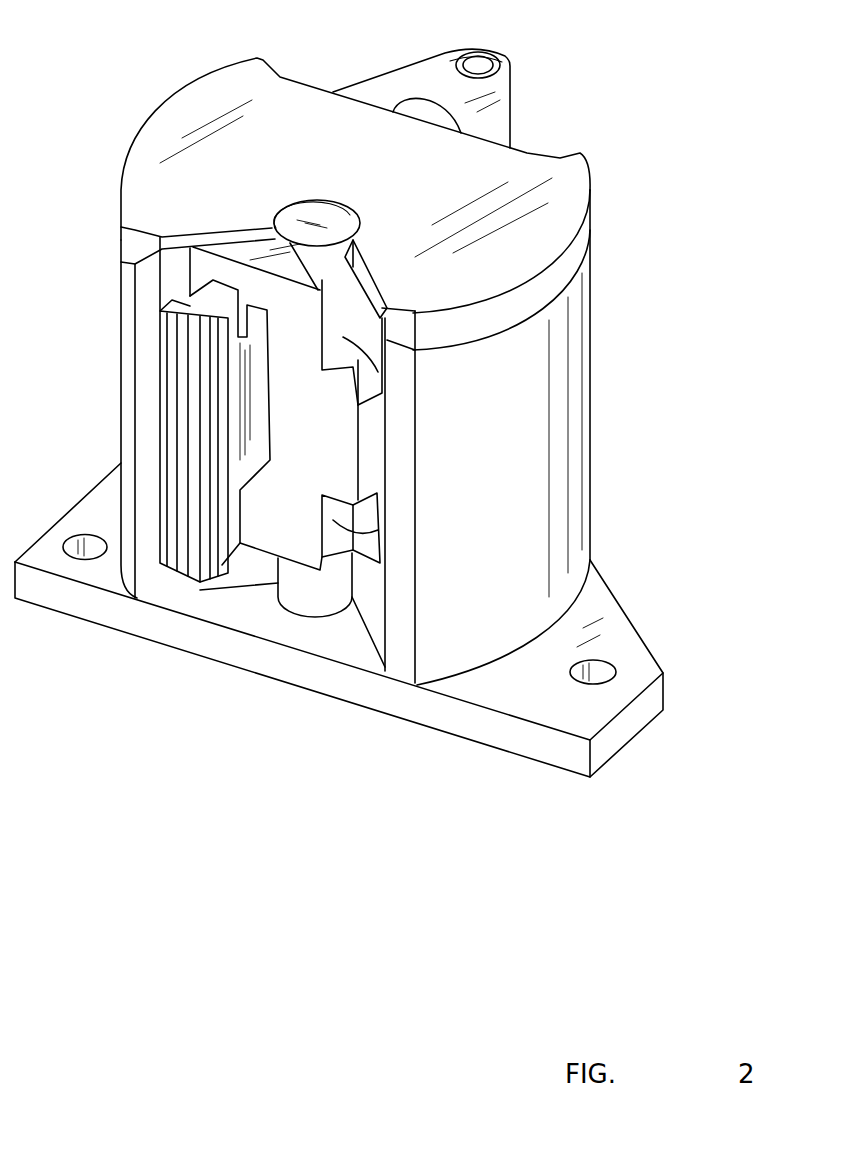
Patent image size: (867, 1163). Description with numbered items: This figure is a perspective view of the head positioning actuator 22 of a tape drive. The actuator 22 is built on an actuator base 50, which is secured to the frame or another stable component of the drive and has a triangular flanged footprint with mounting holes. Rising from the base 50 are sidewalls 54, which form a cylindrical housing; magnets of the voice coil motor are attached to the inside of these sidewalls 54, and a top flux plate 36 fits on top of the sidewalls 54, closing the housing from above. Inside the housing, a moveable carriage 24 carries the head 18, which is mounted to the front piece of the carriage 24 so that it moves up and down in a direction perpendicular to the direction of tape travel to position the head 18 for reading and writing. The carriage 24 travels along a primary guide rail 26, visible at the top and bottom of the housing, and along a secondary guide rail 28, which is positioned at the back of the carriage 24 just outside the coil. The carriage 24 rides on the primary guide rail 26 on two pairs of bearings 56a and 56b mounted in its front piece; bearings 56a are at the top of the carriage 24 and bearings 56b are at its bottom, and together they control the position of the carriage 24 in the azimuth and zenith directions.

The head 18 is at (180, 462).
The actuator 22 is at (660, 241).
The moveable carriage 24 is at (363, 452).
The primary guide rail 26 is at (312, 212).
The secondary guide rail 28 is at (425, 107).
The top flux plate 36 is at (537, 162).
The actuator base 50 is at (607, 597).
The sidewalls 54 is at (580, 384).
The bearings 56a is at (345, 337).
The bearings 56b is at (350, 527).